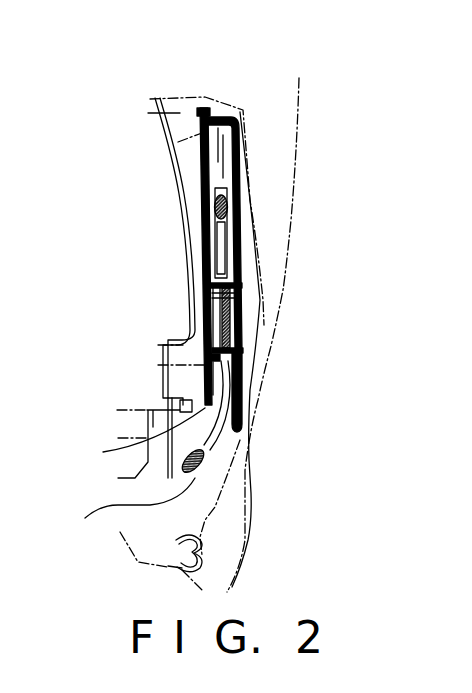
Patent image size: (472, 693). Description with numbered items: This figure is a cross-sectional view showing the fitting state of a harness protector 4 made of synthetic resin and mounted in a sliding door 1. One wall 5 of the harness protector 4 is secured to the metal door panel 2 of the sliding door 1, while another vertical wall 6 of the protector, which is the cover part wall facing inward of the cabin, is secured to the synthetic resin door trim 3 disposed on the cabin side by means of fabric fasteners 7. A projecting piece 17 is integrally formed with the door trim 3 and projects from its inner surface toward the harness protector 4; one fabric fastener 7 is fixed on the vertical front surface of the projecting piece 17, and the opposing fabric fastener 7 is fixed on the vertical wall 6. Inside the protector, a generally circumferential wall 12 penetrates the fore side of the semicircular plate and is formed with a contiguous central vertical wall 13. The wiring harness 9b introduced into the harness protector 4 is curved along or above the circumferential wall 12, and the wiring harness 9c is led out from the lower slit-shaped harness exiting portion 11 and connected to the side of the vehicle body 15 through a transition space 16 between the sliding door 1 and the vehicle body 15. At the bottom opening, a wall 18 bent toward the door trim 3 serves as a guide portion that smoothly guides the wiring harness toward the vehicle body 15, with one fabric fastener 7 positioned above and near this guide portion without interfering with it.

The sliding door 1 is at (302, 282).
The door panel 2 is at (258, 245).
The door trim 3 is at (183, 171).
The harness protector 4 is at (248, 270).
The wall 5 is at (240, 230).
The vertical wall 6 is at (208, 216).
The fabric fastener 7 is at (200, 112).
The wiring harness 9b is at (240, 187).
The wiring harness 9c is at (195, 472).
The harness exiting portion 11 is at (240, 433).
The circumferential wall 12 is at (238, 347).
The central vertical wall 13 is at (226, 335).
The vehicle body 15 is at (128, 401).
The transition space 16 is at (142, 499).
The projecting piece 17 is at (178, 122).
The wall 18 is at (105, 453).